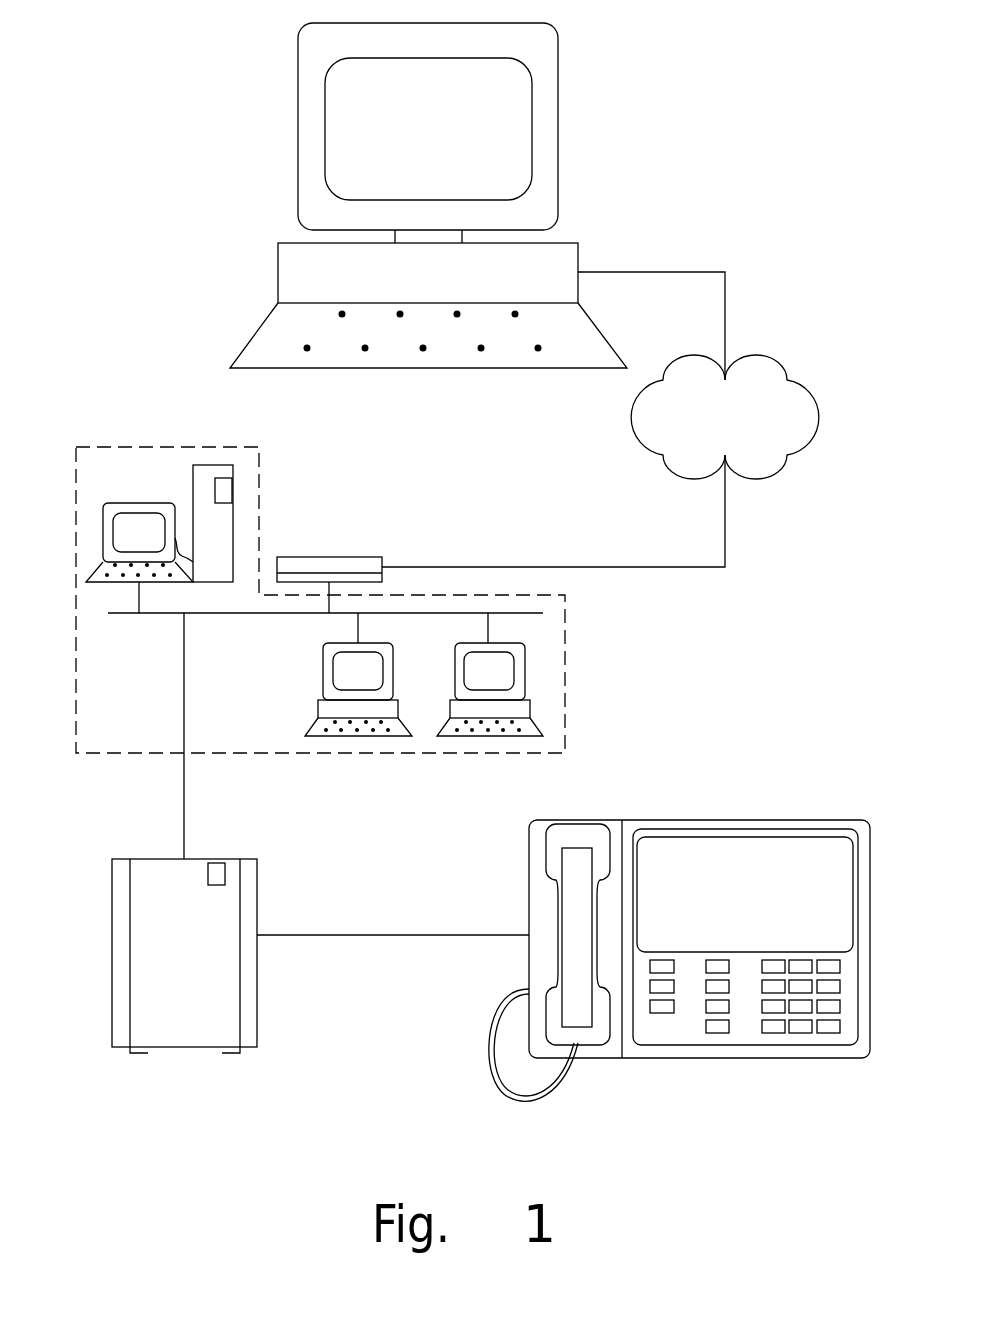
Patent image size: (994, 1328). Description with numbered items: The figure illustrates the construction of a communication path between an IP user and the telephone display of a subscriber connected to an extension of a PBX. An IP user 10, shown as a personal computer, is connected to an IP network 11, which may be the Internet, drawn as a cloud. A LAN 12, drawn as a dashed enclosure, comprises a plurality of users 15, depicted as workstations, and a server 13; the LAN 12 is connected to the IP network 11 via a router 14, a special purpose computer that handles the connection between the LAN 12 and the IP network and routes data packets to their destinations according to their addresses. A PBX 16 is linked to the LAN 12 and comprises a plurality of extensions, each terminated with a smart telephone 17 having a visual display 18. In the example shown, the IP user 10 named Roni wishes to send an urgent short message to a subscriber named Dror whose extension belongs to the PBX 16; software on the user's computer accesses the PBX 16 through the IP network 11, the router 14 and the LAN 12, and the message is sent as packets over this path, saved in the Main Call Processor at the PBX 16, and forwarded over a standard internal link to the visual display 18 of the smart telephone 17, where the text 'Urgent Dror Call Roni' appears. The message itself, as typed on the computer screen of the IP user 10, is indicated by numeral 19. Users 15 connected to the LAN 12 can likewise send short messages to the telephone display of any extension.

The IP user 10 is at (553, 62).
The IP network 11 is at (785, 355).
The LAN 12 is at (568, 700).
The server 13 is at (222, 529).
The router 14 is at (362, 555).
The users 15 is at (392, 680).
The PBX 16 is at (127, 940).
The smart telephone 17 is at (770, 1058).
The visual display 18 is at (793, 847).
The message on computer display 19 is at (507, 163).